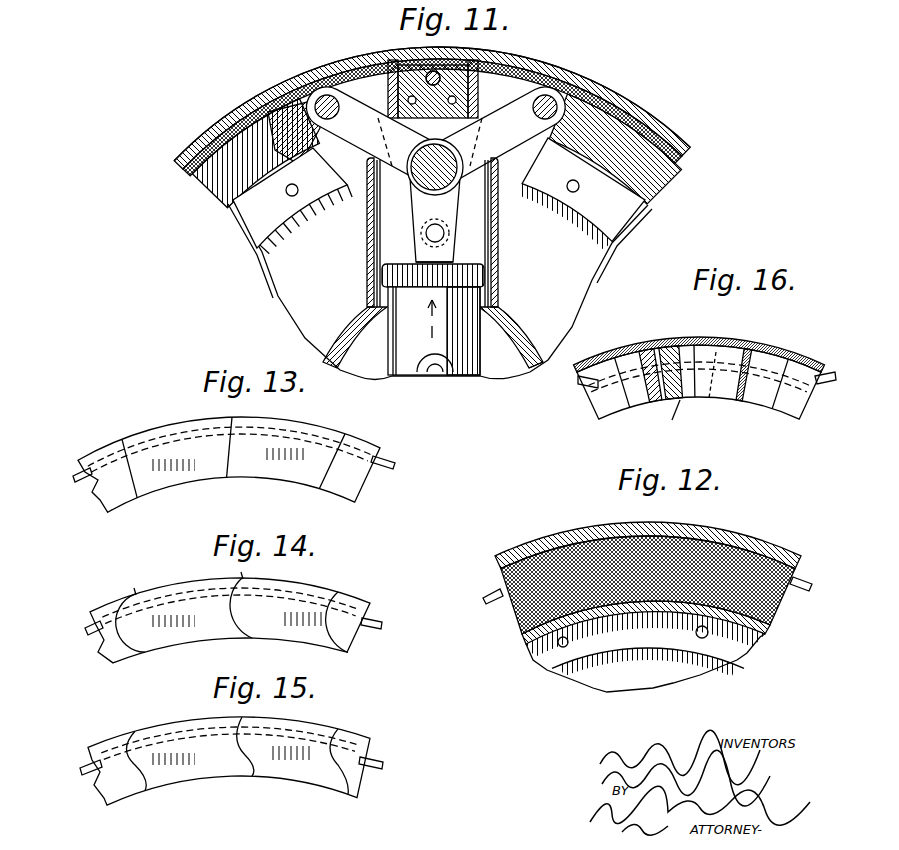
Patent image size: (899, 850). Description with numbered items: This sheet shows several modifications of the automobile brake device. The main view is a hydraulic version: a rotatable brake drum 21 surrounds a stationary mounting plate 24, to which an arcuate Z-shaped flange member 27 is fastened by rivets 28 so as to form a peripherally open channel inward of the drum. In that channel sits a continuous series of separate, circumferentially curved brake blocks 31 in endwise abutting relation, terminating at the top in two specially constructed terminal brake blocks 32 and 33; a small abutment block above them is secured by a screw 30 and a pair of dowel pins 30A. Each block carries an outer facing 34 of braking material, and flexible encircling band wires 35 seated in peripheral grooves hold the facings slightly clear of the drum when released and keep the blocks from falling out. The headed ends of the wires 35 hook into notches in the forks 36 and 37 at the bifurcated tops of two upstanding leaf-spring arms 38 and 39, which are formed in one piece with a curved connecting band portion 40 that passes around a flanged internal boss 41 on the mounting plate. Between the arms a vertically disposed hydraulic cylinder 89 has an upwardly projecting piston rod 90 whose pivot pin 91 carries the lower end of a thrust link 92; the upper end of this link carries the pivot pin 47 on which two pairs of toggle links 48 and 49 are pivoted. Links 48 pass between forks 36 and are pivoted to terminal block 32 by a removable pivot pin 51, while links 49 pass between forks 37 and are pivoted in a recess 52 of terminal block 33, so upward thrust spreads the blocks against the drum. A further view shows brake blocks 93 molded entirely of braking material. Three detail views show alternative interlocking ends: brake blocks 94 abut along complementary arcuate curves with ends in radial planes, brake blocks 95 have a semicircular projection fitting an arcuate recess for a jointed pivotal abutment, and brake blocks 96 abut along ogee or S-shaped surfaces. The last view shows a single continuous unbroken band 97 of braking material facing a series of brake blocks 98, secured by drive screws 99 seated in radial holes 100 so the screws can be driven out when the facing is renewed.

In FIG. 11, the brake drum 21 is at (652, 114).
In FIG. 12, the brake drum 21 is at (562, 548).
In FIG. 12, the mounting plate 24 is at (706, 672).
In FIG. 11, the flange member 27 is at (641, 206).
In FIG. 12, the flange member 27 is at (752, 655).
In FIG. 12, the rivets 28 is at (569, 643).
In FIG. 11, the screw 30 is at (467, 58).
In FIG. 11, the dowel pins 30A is at (433, 99).
In FIG. 11, the brake blocks 31 is at (662, 189).
In FIG. 11, the terminal brake block 32 is at (292, 201).
In FIG. 11, the terminal brake block 33 is at (581, 194).
In FIG. 11, the facing 34 is at (580, 98).
In FIG. 16, the band wires 35 is at (580, 385).
In FIG. 13, the band wires 35 is at (80, 480).
In FIG. 14, the band wires 35 is at (86, 630).
In FIG. 15, the band wires 35 is at (82, 768).
In FIG. 12, the band wires 35 is at (488, 594).
In FIG. 11, the forks 36 is at (382, 132).
In FIG. 11, the forks 37 is at (490, 133).
In FIG. 11, the leaf-spring arm 38 is at (368, 244).
In FIG. 11, the leaf-spring arm 39 is at (499, 244).
In FIG. 11, the connecting band portion 40 is at (540, 325).
In FIG. 11, the internal boss 41 is at (530, 352).
In FIG. 11, the pivot pin 47 is at (424, 169).
In FIG. 11, the toggle links 48 is at (365, 145).
In FIG. 11, the toggle links 49 is at (500, 146).
In FIG. 11, the pivot pin 51 is at (339, 116).
In FIG. 11, the recess 52 is at (529, 107).
In FIG. 11, the hydraulic cylinder 89 is at (410, 348).
In FIG. 11, the piston rod 90 is at (418, 257).
In FIG. 11, the pivot pin 91 is at (430, 233).
In FIG. 11, the thrust link 92 is at (426, 216).
In FIG. 12, the brake blocks 93 is at (622, 545).
In FIG. 13, the brake blocks 94 is at (122, 496).
In FIG. 14, the brake blocks 95 is at (112, 610).
In FIG. 15, the brake blocks 96 is at (125, 790).
In FIG. 16, the band of braking material 97 is at (636, 356).
In FIG. 16, the brake blocks 98 is at (790, 366).
In FIG. 16, the drive screws 99 is at (695, 348).
In FIG. 16, the holes 100 is at (768, 411).